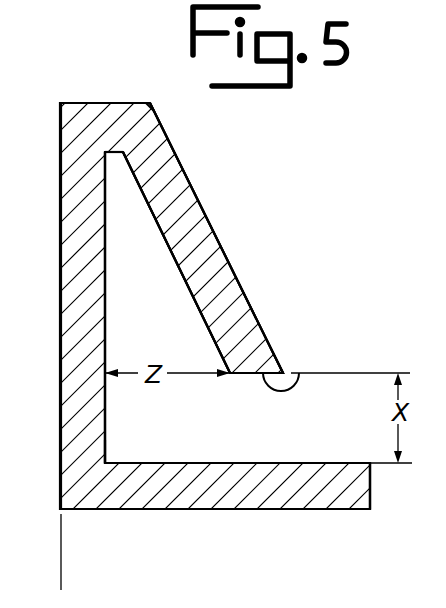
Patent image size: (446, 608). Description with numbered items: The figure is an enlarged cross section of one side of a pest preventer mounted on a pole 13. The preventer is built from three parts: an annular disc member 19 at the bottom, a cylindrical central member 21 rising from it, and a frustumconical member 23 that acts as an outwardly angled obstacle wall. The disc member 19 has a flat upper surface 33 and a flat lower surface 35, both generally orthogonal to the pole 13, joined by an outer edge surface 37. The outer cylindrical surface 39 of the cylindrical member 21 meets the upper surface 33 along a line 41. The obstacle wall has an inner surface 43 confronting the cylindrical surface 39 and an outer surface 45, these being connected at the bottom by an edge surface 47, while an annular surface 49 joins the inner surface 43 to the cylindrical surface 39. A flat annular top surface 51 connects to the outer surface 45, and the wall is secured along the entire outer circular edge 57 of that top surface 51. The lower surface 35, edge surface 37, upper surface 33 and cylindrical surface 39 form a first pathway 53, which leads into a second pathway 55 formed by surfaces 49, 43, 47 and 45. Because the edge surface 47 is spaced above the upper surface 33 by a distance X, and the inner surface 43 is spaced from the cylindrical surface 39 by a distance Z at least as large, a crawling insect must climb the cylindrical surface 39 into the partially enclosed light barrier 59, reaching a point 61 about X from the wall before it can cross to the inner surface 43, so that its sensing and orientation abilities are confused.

The pole 13 is at (62, 569).
The annular disc member 19 is at (292, 502).
The cylindrical central member 21 is at (72, 285).
The frustumconical member 23 is at (167, 158).
The upper surface 33 is at (253, 463).
The lower surface 35 is at (183, 509).
The outer edge surface 37 is at (370, 488).
The outer cylindrical surface 39 is at (105, 284).
The line 41 is at (107, 461).
The inner surface 43 is at (168, 246).
The outer surface 45 is at (200, 207).
The edge surface 47 is at (296, 377).
The annular surface 49 is at (118, 153).
The top surface 51 is at (110, 103).
The first pathway 53 is at (308, 452).
The second pathway 55 is at (270, 297).
The outer circular edge 57 is at (150, 103).
The light barrier 59 is at (168, 393).
The point 61 is at (105, 242).